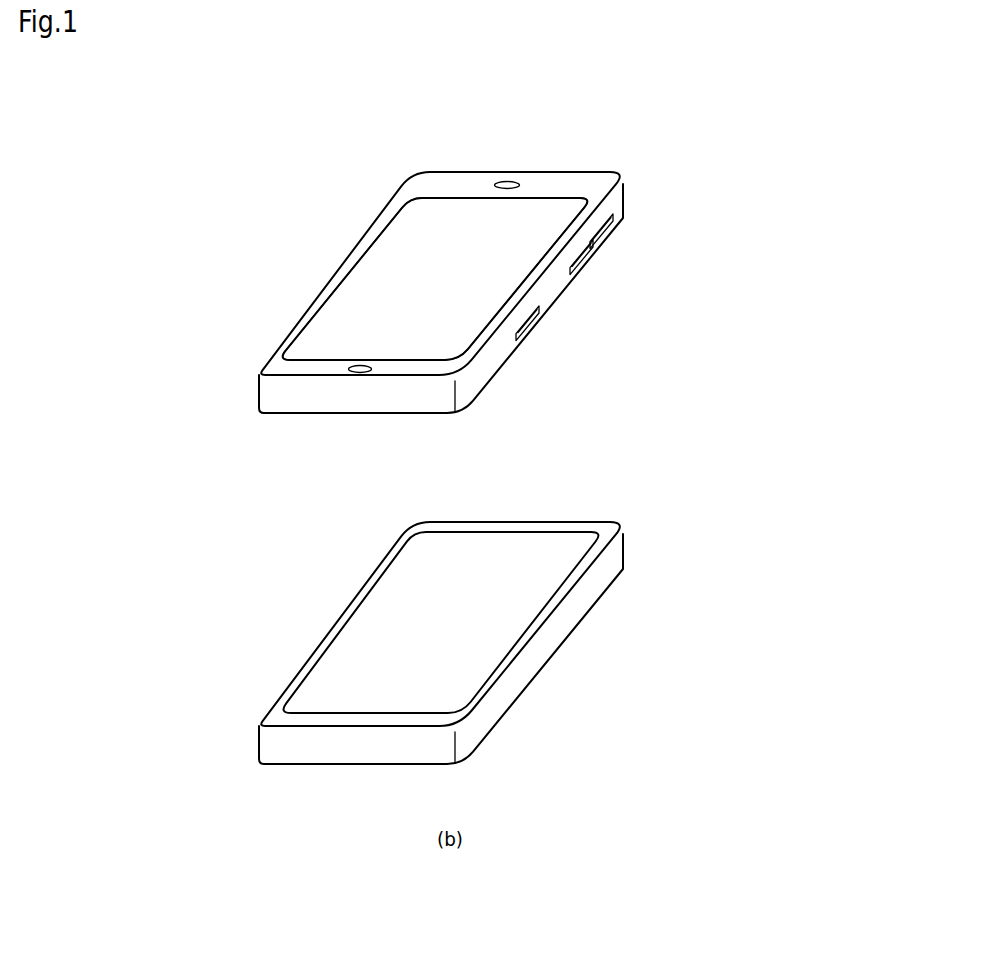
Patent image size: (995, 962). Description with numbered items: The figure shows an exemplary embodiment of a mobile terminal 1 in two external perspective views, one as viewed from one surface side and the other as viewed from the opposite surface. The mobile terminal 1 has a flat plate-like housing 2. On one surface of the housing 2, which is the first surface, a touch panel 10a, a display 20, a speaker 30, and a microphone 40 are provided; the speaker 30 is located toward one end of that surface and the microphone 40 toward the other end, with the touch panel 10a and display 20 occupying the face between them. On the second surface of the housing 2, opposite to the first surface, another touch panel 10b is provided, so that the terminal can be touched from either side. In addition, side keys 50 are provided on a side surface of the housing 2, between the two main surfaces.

The mobile terminal 1 is at (643, 151).
The housing 2 is at (622, 203).
The touch panel 10a is at (358, 275).
The touch panel 10b is at (330, 667).
The display 20 is at (299, 351).
The speaker 30 is at (507, 181).
The microphone 40 is at (359, 372).
The side keys 50 is at (607, 246).